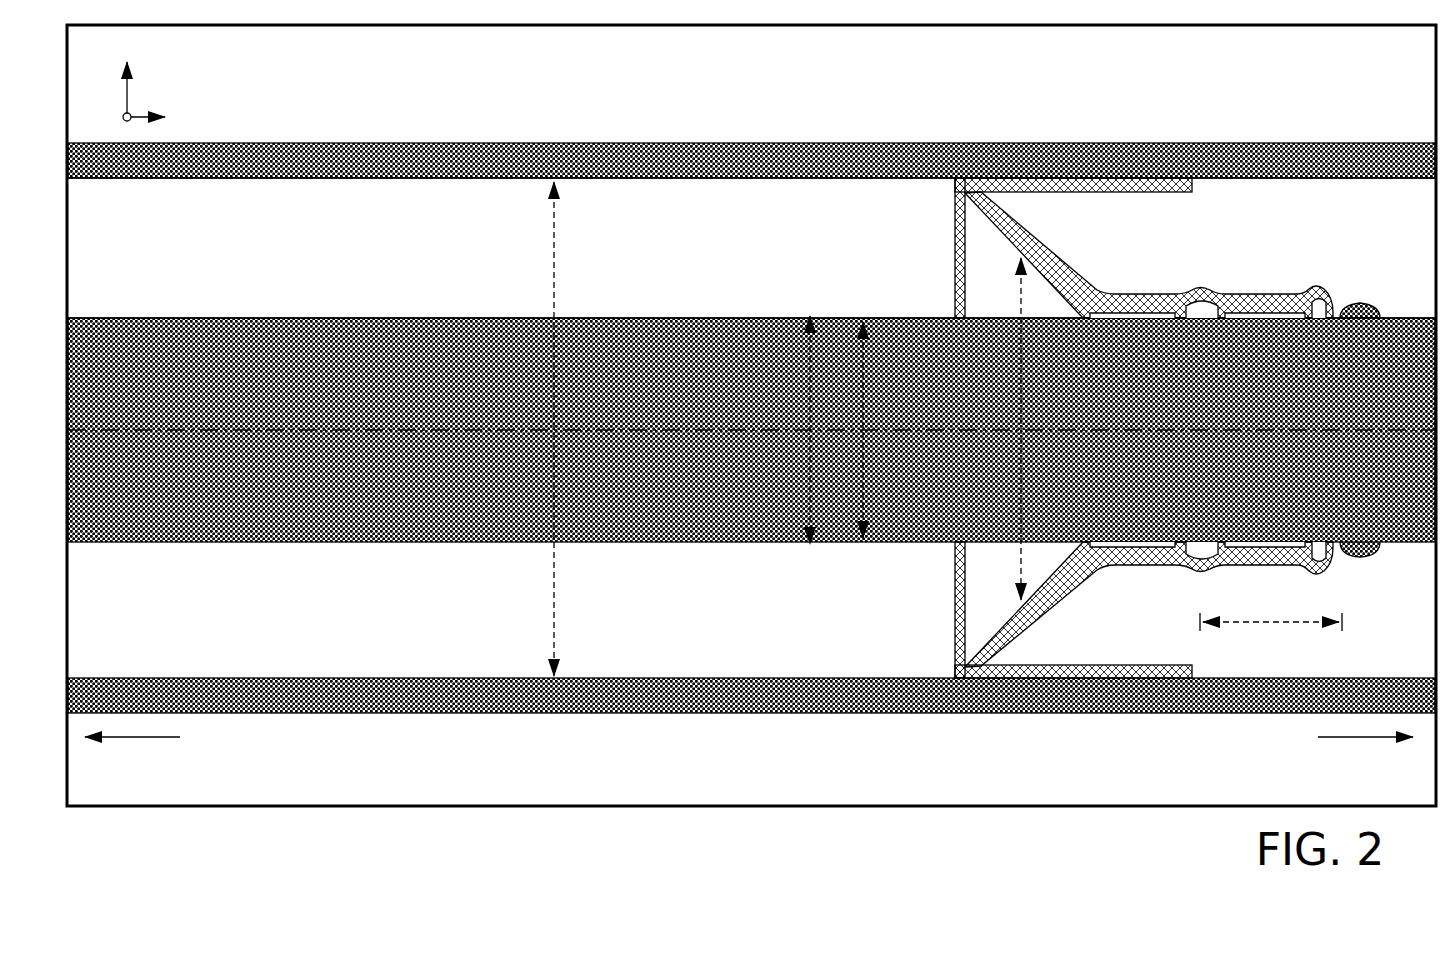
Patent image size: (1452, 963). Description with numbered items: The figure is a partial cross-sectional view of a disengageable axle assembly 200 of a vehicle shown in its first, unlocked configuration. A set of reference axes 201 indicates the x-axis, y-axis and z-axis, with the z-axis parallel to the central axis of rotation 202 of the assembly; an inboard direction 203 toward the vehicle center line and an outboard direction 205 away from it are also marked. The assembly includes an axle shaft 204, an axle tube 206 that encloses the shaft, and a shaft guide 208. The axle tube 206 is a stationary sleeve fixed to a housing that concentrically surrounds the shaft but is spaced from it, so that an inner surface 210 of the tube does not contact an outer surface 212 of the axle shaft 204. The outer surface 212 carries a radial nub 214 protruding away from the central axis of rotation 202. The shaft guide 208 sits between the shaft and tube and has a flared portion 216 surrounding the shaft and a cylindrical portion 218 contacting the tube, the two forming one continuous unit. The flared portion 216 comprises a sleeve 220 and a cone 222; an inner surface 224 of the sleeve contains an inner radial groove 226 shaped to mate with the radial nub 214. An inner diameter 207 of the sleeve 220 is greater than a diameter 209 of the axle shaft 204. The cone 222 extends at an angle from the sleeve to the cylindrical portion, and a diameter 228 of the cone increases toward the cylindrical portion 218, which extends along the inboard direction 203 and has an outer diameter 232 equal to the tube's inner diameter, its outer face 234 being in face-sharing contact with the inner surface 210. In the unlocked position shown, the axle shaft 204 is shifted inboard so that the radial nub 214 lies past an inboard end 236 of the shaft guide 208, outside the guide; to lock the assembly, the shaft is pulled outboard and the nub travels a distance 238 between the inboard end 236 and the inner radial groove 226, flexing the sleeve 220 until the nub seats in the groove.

The disengageable axle assembly 200 is at (1340, 63).
The set of reference axes 201 is at (168, 84).
The central axis of rotation 202 is at (438, 428).
The inboard direction 203 is at (1356, 738).
The axle shaft 204 is at (194, 379).
The outboard direction 205 is at (138, 738).
The axle tube 206 is at (708, 140).
The inner diameter of the sleeve 207 is at (808, 385).
The shaft guide 208 is at (1166, 428).
The diameter of the axle shaft 209 is at (865, 400).
The inner surface of the axle tube 210 is at (381, 181).
The outer surface of the axle shaft 212 is at (436, 318).
The radial nub 214 is at (1357, 305).
The flared portion 216 is at (1171, 255).
The cylindrical portion 218 is at (1058, 198).
The sleeve 220 is at (1256, 563).
The cone 222 is at (1052, 600).
The inner surface of the sleeve 224 is at (1138, 548).
The inner radial groove 226 is at (1200, 557).
The diameter of the cone 228 is at (1019, 558).
The outer diameter of the cylindrical portion 232 is at (552, 250).
The outer face 234 is at (1136, 679).
The inboard end of the shaft guide 236 is at (1336, 294).
The distance 238 is at (1270, 623).